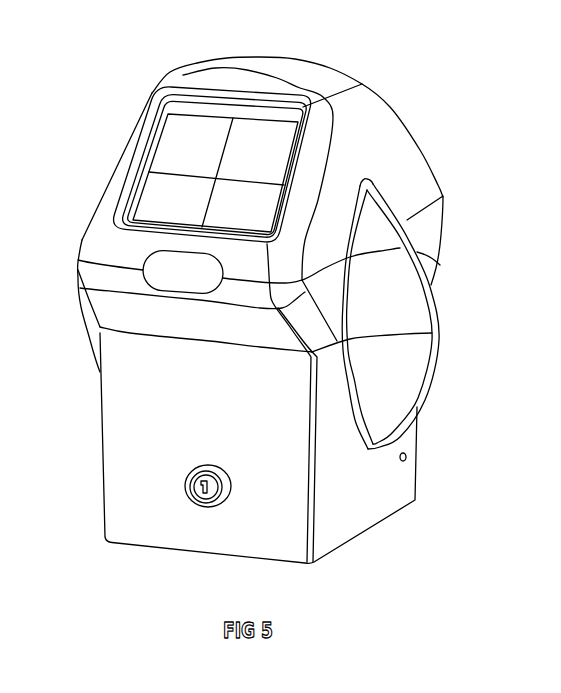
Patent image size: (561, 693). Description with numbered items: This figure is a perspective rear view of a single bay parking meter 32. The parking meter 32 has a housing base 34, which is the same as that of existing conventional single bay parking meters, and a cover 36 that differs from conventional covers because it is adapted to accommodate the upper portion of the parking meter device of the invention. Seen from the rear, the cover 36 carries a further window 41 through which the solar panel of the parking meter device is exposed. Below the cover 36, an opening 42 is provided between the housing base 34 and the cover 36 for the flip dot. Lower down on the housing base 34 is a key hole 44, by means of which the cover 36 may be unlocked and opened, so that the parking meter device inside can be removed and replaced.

The single bay parking meter 32 is at (249, 301).
The housing base 34 is at (418, 432).
The cover 36 is at (417, 147).
The further window 41 is at (172, 149).
The opening 42 is at (169, 270).
The key hole 44 is at (195, 497).